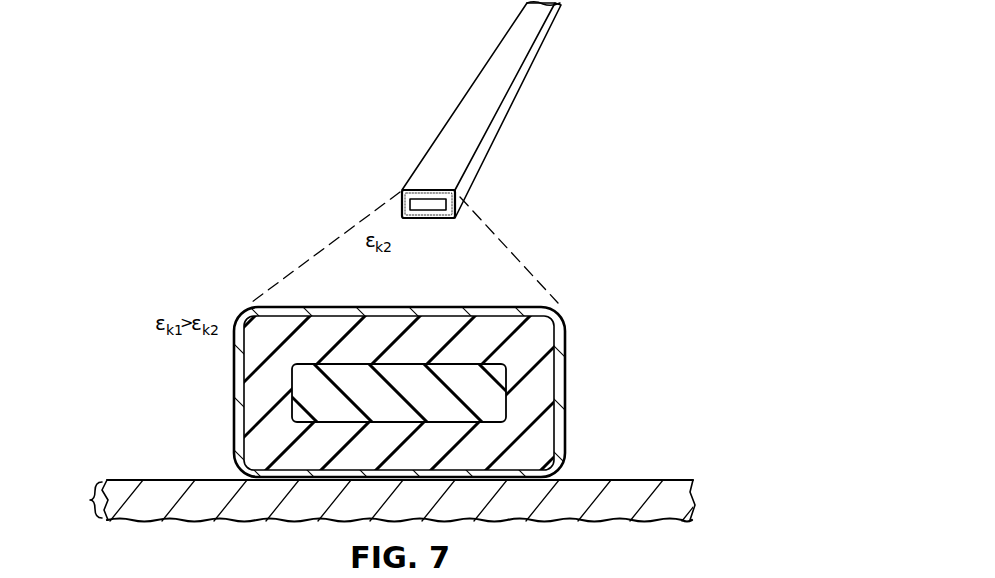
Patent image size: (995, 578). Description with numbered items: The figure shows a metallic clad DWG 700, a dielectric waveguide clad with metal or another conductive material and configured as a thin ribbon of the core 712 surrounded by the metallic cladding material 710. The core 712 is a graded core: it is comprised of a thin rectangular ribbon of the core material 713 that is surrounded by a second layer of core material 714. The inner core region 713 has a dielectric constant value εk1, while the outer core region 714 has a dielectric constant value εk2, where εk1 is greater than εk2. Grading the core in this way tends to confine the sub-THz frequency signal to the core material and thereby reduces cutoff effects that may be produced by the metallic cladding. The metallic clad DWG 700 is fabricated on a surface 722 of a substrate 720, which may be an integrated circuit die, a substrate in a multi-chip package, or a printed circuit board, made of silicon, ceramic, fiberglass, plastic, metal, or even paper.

The metallic clad DWG 700 is at (474, 98).
The metallic cladding material 710 is at (235, 411).
The core 712 is at (443, 313).
The core material 713 is at (294, 374).
The second layer of core material 714 is at (398, 323).
The substrate 720 is at (77, 500).
The surface 722 is at (627, 480).